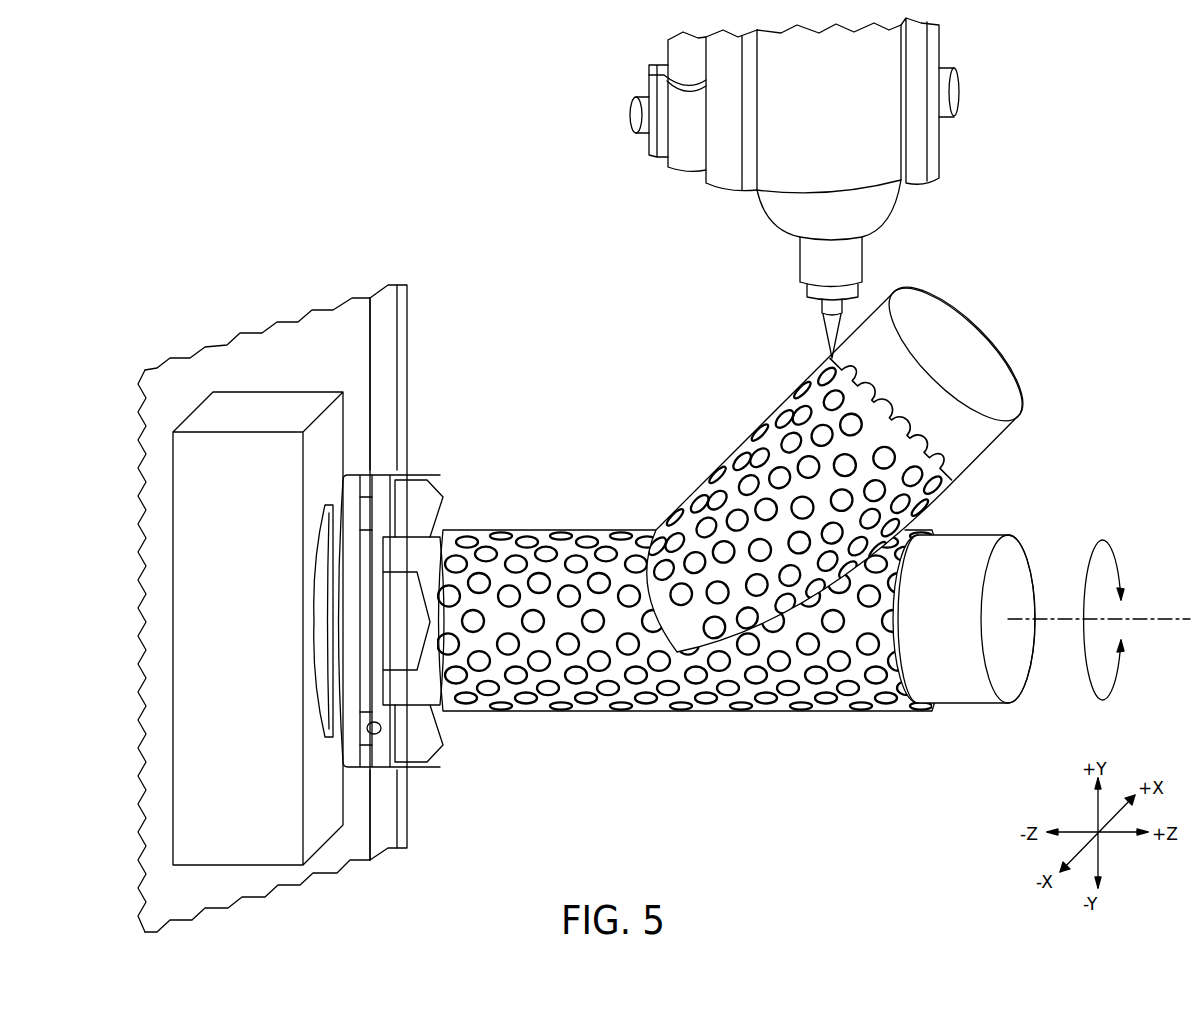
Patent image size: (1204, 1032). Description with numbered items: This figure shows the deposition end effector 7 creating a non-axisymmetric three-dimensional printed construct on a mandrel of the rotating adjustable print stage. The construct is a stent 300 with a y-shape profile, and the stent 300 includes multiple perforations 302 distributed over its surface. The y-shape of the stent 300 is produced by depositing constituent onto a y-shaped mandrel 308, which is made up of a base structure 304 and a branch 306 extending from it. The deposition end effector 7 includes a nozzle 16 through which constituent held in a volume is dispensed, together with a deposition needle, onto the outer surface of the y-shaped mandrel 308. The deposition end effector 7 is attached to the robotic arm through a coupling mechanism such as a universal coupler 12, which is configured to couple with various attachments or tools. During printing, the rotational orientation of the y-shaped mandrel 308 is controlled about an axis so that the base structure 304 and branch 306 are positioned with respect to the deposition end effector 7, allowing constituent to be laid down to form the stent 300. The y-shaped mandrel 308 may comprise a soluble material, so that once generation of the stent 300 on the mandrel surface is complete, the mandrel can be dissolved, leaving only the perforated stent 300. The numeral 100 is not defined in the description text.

The deposition end effector 7 is at (777, 292).
The universal coupler 12 is at (831, 359).
The nozzle 16 is at (797, 215).
The machining fixture 100 is at (433, 417).
The stent 300 is at (813, 509).
The perforations 302 is at (812, 682).
The base structure 304 is at (940, 684).
The branch 306 is at (835, 474).
The y-shaped mandrel 308 is at (682, 455).